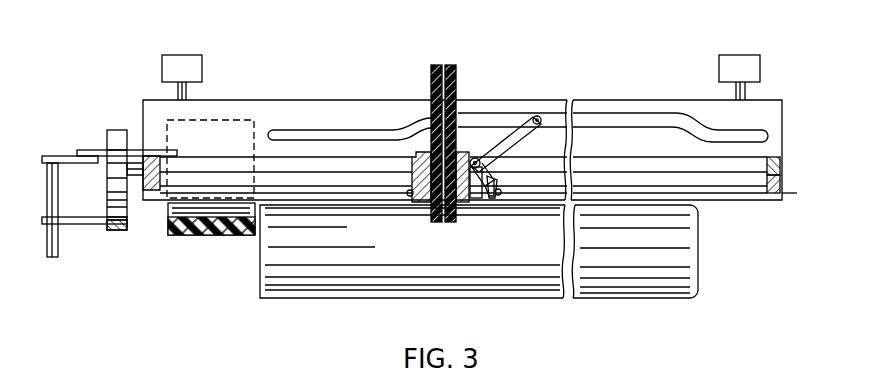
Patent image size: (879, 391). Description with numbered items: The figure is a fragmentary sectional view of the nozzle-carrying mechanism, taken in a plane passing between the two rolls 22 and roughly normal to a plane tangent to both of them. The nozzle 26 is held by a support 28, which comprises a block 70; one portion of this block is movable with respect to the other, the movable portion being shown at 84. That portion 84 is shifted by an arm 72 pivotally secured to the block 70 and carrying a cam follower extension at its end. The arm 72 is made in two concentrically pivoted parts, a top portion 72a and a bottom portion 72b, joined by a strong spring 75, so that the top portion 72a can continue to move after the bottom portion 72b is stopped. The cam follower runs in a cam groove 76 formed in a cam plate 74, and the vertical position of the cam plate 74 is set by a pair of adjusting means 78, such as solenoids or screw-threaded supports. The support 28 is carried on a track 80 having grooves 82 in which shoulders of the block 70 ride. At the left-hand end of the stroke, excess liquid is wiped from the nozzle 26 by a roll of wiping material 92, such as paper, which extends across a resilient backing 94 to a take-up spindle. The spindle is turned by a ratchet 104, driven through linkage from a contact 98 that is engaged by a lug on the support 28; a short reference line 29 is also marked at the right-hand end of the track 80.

The rolls 22 is at (620, 280).
The nozzle 26 is at (455, 73).
The support 28 is at (409, 171).
The reference line 29 is at (797, 197).
The block 70 is at (422, 204).
The arm 72 is at (527, 130).
The top portion of arm 72a is at (477, 158).
The bottom portion of arm 72b is at (477, 200).
The cam plate 74 is at (680, 102).
The spring 75 is at (490, 197).
The cam groove 76 is at (627, 122).
The adjusting means 78 is at (182, 58).
The track 80 is at (757, 180).
The grooves 82 is at (782, 172).
The movable portion of block 84 is at (467, 208).
The roll of wiping material 92 is at (170, 205).
The resilient backing 94 is at (192, 237).
The contact 98 is at (137, 150).
The ratchet 104 is at (112, 130).